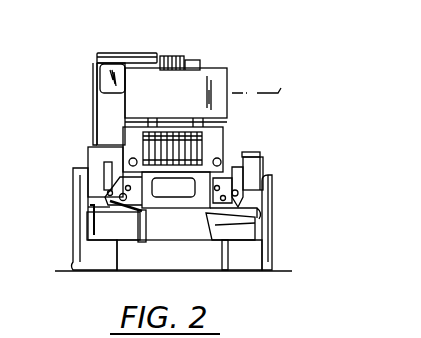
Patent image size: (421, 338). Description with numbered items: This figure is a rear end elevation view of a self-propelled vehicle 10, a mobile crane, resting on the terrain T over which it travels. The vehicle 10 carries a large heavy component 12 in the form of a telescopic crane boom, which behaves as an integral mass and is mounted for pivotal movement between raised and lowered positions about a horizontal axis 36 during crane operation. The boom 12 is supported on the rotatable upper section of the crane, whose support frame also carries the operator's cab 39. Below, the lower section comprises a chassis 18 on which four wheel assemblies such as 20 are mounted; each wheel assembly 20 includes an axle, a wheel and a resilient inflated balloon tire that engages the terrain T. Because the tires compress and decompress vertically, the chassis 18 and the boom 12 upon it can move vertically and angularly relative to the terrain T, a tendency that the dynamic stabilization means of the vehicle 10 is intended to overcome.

The self-propelled vehicle 10 is at (90, 108).
The telescopic crane boom 12 is at (196, 59).
The chassis 18 is at (170, 212).
The wheel assembly 20 is at (277, 192).
The horizontal axis 36 is at (263, 81).
The operator's cab 39 is at (91, 91).
The terrain T is at (286, 272).